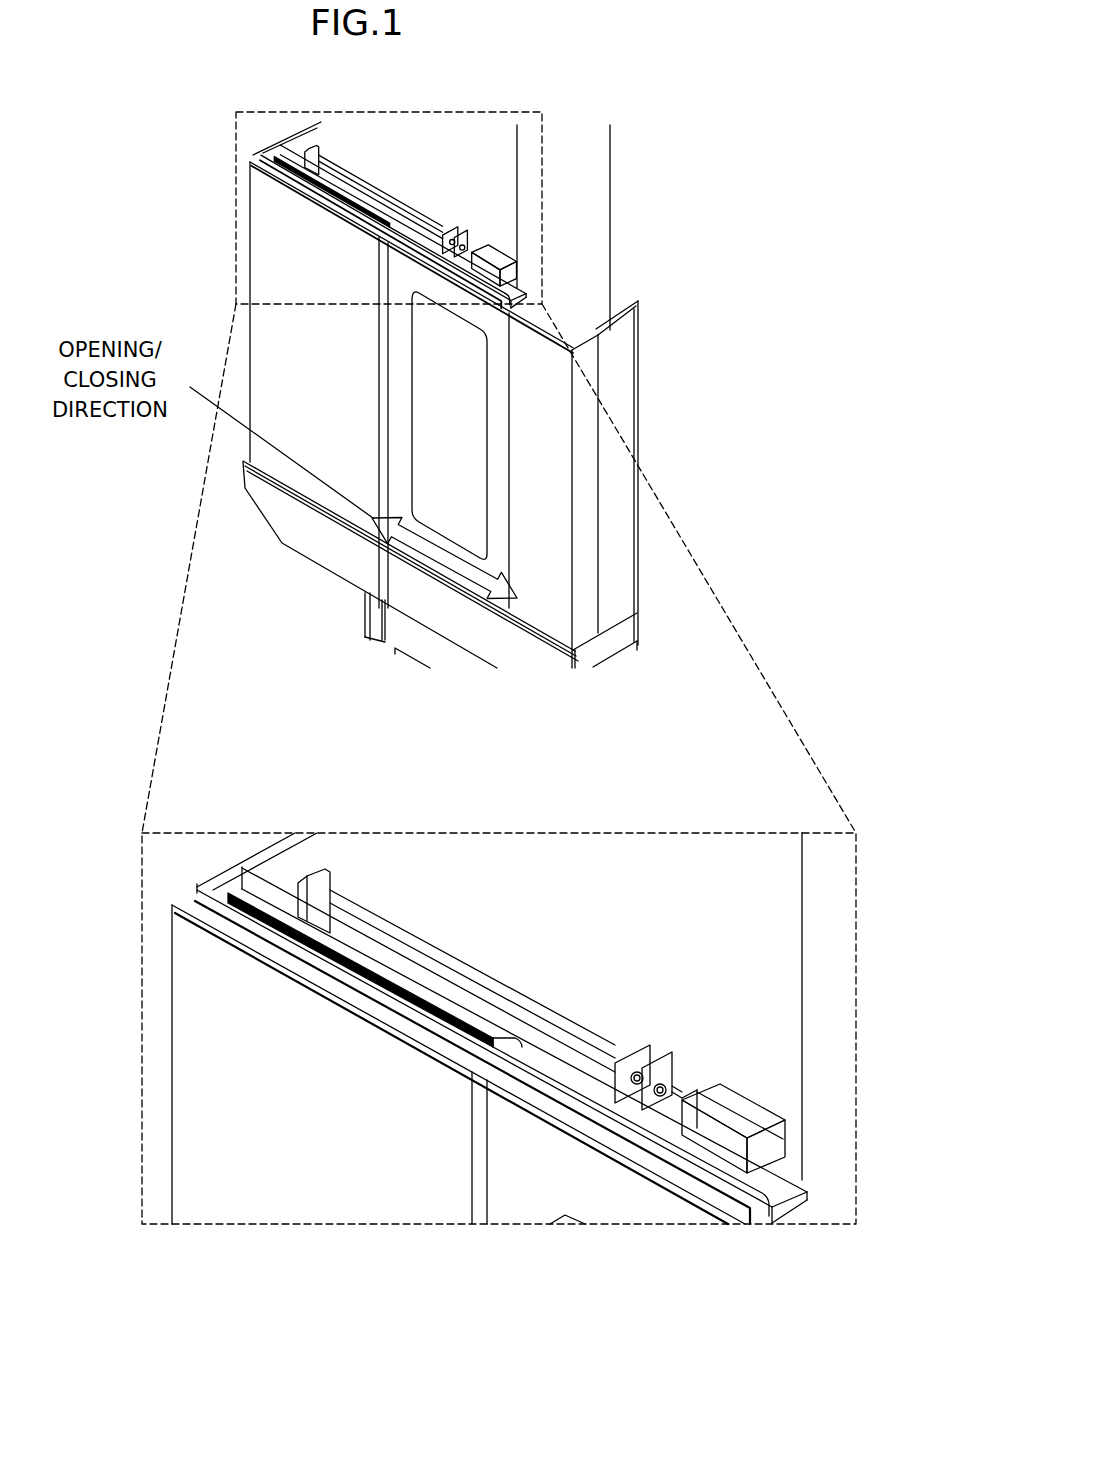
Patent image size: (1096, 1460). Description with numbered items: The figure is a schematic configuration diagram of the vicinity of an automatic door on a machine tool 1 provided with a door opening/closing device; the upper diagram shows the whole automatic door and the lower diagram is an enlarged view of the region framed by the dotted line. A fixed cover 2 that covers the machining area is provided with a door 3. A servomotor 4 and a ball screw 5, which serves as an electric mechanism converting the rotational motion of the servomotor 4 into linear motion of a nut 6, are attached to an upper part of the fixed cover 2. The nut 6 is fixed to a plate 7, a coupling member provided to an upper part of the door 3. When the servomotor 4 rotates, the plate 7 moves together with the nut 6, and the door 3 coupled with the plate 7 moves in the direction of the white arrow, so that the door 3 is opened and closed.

The machine tool 1 is at (693, 96).
The fixed cover 2 is at (260, 267).
The door 3 is at (503, 480).
The servomotor 4 is at (750, 1113).
The ball screw 5 is at (466, 976).
The nut 6 is at (643, 1057).
The plate 7 is at (553, 1076).